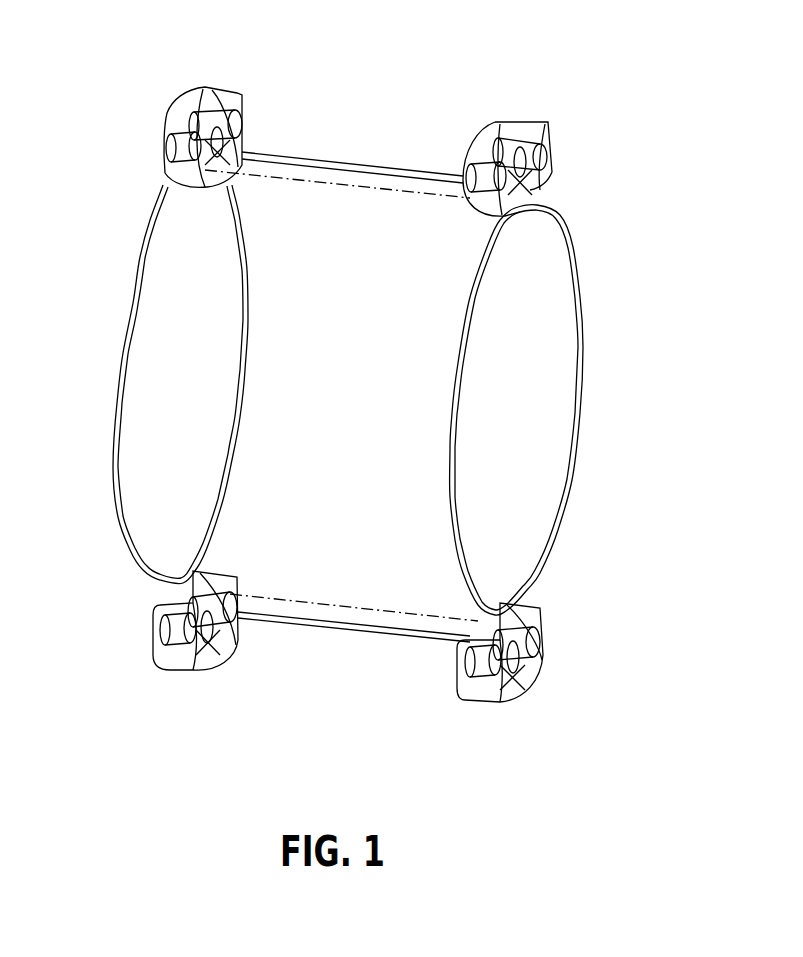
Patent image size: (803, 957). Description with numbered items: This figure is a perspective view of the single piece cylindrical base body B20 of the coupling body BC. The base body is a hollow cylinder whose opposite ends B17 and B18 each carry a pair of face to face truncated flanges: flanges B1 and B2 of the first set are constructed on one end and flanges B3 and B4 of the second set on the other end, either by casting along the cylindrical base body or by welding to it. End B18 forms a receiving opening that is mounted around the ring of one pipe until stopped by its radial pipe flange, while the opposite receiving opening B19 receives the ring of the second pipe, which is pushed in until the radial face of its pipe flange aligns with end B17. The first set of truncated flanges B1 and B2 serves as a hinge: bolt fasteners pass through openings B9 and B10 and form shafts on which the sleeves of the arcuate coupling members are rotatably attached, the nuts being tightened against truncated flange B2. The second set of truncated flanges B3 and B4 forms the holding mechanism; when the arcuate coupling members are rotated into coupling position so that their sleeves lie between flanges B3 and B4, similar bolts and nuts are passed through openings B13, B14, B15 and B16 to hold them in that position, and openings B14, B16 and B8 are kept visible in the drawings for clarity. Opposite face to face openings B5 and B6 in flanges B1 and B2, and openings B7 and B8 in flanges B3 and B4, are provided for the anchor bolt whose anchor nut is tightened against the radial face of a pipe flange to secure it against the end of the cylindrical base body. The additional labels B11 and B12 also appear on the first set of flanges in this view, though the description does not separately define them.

The coupling body BC is at (455, 105).
The truncated flange B1 is at (172, 97).
The truncated flange B2 is at (505, 160).
The truncated flange B3 is at (177, 670).
The truncated flange B4 is at (465, 698).
The opening B5 is at (219, 130).
The opening B6 is at (548, 173).
The opening B7 is at (220, 650).
The opening B8 is at (532, 670).
The opening B9 is at (240, 118).
The opening B10 is at (545, 155).
The first fastener B11 is at (217, 152).
The second fastener B12 is at (548, 203).
The opening B13 is at (233, 627).
The opening B14 is at (533, 647).
The opening B15 is at (197, 667).
The opening B16 is at (512, 693).
The end B17 is at (124, 320).
The end B18 is at (578, 482).
The receiving opening B19 is at (178, 343).
The cylindrical base body B20 is at (378, 165).